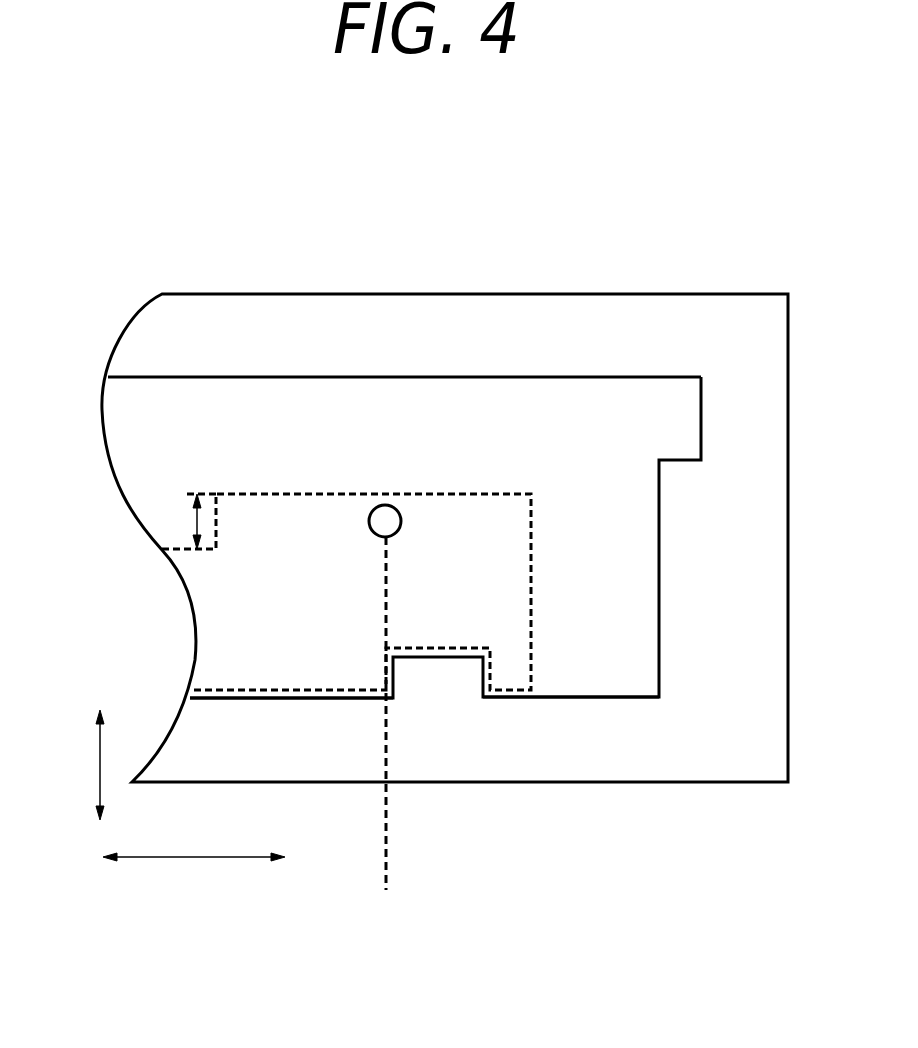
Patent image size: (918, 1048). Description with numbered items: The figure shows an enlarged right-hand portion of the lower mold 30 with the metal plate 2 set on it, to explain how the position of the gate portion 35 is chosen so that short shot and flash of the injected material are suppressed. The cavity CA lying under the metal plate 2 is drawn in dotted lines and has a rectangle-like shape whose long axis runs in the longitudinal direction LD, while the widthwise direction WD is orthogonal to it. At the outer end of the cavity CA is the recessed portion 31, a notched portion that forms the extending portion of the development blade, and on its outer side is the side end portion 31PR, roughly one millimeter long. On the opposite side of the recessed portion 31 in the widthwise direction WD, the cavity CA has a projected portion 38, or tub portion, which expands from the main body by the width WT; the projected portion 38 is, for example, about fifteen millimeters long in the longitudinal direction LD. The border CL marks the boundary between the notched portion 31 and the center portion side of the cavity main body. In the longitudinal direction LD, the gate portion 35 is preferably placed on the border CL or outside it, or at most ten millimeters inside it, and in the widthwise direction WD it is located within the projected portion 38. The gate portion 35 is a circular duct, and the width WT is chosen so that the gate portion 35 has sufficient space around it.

The metal plate 2 is at (262, 377).
The mold 30 is at (497, 293).
The recessed portion 31 is at (443, 648).
The side end portion 31PR is at (510, 690).
The gate portion 35 is at (393, 505).
The projected portion 38 is at (288, 512).
The border CL is at (387, 740).
The cavity CA is at (255, 690).
The width WT is at (193, 518).
The widthwise direction WD is at (78, 765).
The longitudinal direction LD is at (194, 882).